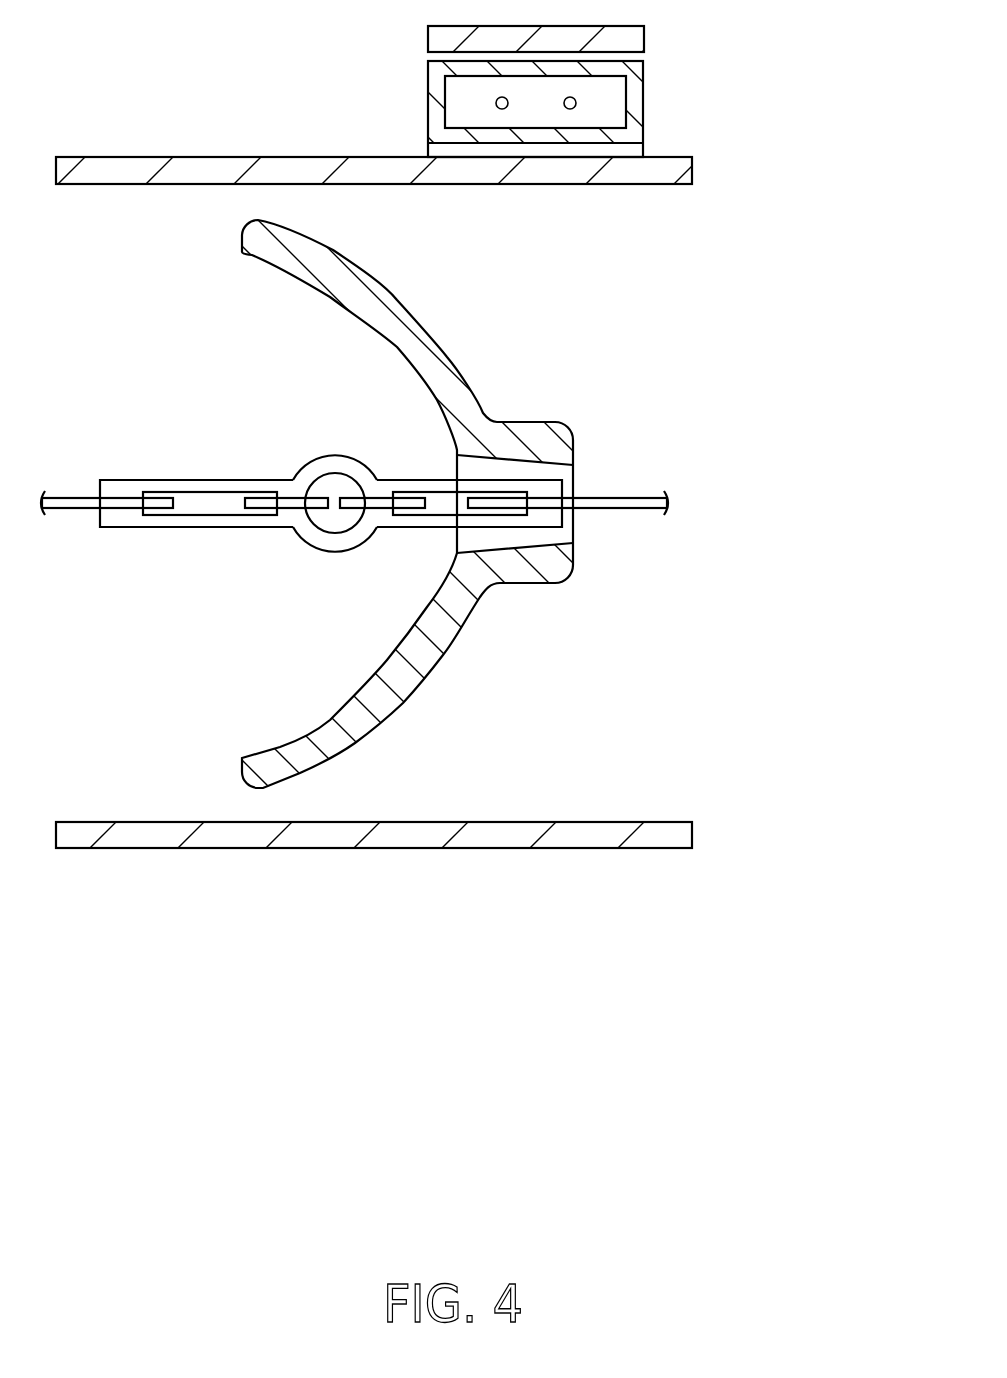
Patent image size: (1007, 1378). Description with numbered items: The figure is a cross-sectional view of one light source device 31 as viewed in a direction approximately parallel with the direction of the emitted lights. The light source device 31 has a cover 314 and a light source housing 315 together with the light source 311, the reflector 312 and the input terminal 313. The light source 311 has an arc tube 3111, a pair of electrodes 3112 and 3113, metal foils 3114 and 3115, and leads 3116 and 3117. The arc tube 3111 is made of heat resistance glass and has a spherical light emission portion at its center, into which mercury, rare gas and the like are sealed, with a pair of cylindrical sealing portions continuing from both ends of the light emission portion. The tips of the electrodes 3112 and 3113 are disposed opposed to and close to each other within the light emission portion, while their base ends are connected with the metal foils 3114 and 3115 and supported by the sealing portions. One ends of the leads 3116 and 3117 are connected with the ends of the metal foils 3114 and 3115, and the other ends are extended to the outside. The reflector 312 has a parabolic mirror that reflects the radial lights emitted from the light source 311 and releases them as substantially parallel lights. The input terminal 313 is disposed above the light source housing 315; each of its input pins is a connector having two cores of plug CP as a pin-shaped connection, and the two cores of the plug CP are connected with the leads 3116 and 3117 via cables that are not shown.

The light source device 31 is at (815, 201).
The light source 311 is at (279, 599).
The arc tube 3111 is at (310, 533).
The electrode 3112 is at (320, 495).
The electrode 3113 is at (347, 495).
The metal foil 3114 is at (202, 505).
The metal foil 3115 is at (453, 507).
The lead 3116 is at (68, 498).
The lead 3117 is at (640, 497).
The reflector 312 is at (348, 276).
The input terminal 313 is at (708, 93).
The cover 314 is at (633, 33).
The light source housing 315 is at (676, 172).
The plug CP is at (568, 109).